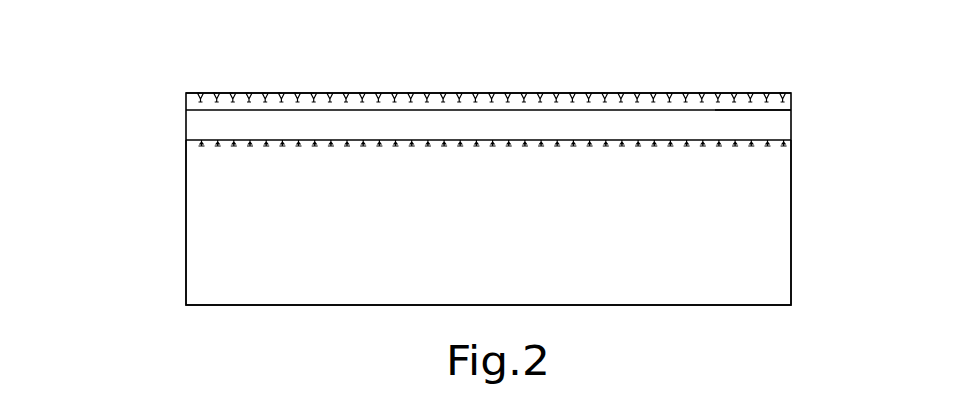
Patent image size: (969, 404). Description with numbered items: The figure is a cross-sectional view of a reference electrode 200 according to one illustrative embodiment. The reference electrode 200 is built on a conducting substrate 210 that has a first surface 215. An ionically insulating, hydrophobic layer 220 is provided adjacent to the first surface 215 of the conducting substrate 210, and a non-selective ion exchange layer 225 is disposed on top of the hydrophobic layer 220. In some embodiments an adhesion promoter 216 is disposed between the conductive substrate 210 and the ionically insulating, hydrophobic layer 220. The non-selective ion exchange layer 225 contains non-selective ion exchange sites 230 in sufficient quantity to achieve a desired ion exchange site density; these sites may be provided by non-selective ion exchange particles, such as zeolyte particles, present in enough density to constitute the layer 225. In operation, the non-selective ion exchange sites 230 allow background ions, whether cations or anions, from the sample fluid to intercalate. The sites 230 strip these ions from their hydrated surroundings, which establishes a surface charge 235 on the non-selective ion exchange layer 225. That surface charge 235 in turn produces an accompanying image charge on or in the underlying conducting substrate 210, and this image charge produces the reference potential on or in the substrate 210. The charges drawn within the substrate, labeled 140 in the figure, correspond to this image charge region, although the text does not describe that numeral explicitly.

The reference electrode 200 is at (166, 231).
The conducting substrate 210 is at (515, 242).
The first surface 215 is at (385, 147).
The adhesion promoter 216 is at (206, 140).
The ionically insulating, hydrophobic layer 220 is at (288, 123).
The non-selective ion exchange layer 225 is at (615, 97).
The non-selective ion exchange sites 230 is at (720, 96).
The surface charge 235 is at (722, 100).
The implanted ions 140 is at (718, 146).